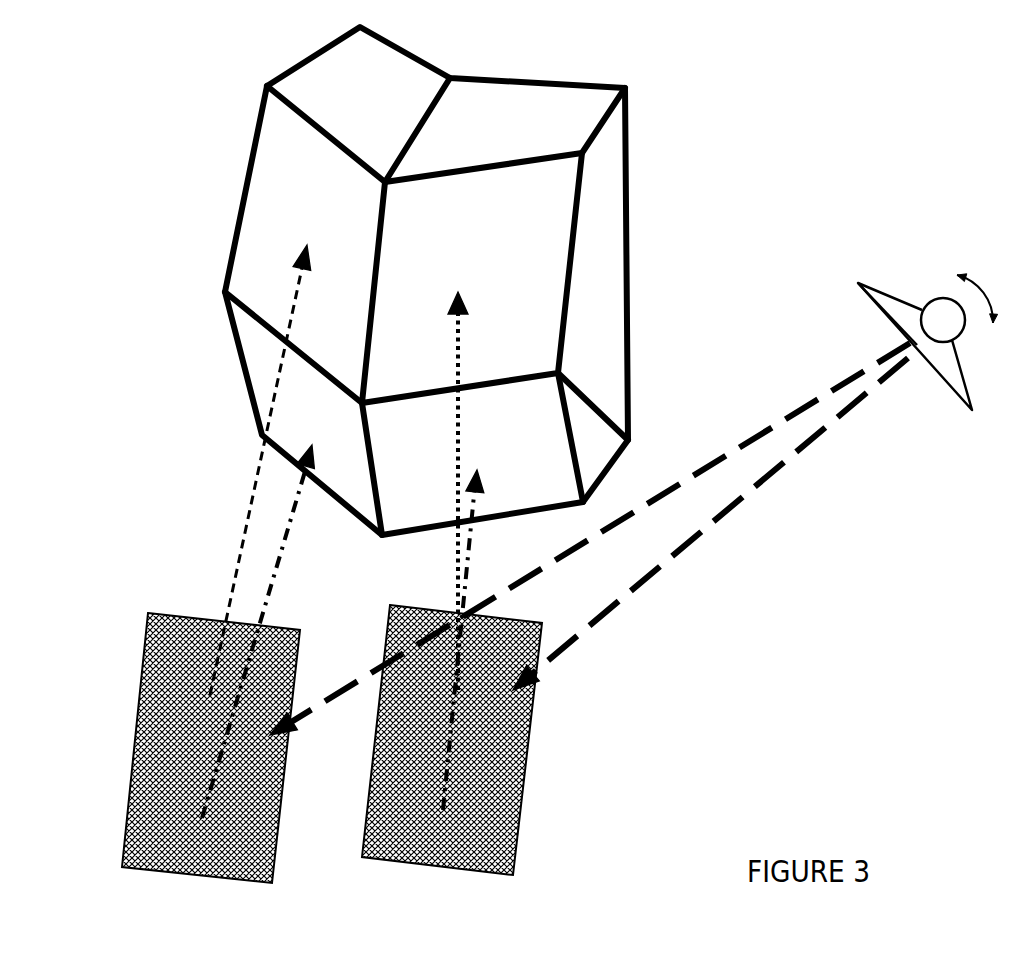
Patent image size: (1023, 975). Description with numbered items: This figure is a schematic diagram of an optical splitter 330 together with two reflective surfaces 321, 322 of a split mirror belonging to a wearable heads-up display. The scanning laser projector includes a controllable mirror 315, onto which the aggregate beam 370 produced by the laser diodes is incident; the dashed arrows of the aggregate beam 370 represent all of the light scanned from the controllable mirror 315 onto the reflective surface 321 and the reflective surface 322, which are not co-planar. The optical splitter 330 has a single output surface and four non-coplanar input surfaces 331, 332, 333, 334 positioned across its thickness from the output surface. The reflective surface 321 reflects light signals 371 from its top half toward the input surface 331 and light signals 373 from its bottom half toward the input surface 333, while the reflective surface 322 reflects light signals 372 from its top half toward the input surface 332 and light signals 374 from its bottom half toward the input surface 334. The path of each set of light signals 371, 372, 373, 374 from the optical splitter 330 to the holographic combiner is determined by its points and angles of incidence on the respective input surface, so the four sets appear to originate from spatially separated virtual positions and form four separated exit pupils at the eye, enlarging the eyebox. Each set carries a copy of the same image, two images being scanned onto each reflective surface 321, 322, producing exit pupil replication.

The controllable mirror 315 is at (943, 383).
The reflective surface 321 is at (517, 850).
The reflective surface 322 is at (125, 830).
The optical splitter 330 is at (233, 232).
The input surface 331 is at (563, 201).
The input surface 332 is at (312, 157).
The input surface 333 is at (538, 421).
The input surface 334 is at (311, 431).
The aggregate beam 370 is at (590, 539).
The light signals 371 is at (460, 345).
The light signals 372 is at (292, 290).
The light signals 373 is at (465, 573).
The light signals 374 is at (278, 562).